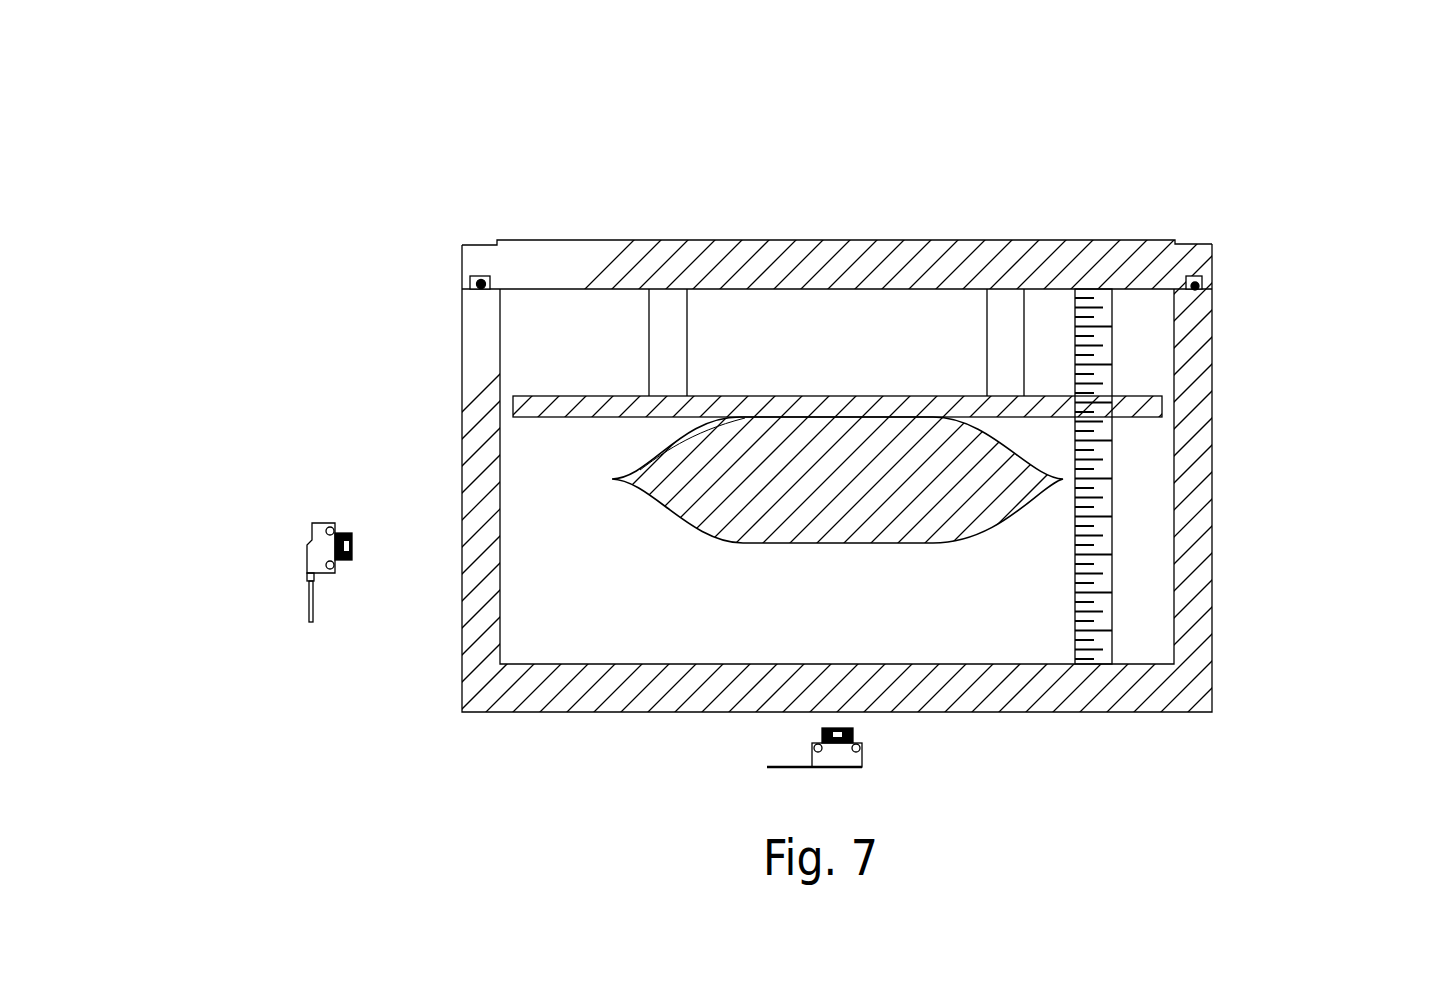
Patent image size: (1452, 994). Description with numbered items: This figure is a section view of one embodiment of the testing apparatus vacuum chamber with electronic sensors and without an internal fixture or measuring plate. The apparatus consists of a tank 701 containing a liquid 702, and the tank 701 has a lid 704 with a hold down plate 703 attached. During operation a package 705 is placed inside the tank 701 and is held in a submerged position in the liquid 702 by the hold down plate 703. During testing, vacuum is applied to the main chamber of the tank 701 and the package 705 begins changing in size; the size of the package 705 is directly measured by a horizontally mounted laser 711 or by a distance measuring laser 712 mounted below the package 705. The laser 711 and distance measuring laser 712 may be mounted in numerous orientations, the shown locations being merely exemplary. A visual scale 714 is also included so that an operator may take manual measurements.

The tank 701 is at (463, 320).
The liquid 702 is at (577, 346).
The hold down plate 703 is at (1154, 406).
The lid 704 is at (1213, 251).
The package 705 is at (1028, 463).
The laser 711 is at (308, 555).
The distance measuring laser 712 is at (822, 769).
The visual scale 714 is at (1113, 524).